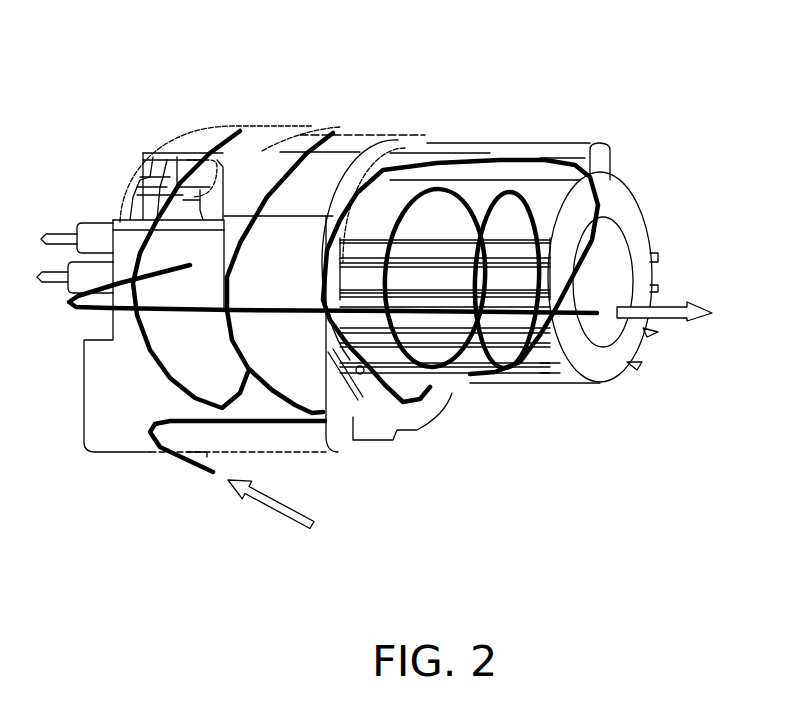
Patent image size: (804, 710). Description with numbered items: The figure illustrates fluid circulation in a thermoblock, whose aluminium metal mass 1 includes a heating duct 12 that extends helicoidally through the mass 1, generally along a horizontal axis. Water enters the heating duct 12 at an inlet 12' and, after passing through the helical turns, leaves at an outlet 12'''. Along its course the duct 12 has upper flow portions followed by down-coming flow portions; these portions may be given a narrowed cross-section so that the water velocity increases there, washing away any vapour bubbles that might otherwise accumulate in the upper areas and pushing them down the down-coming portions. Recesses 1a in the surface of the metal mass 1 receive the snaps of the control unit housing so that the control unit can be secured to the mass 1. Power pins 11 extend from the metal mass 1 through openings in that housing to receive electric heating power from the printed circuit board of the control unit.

The metal mass 1 is at (422, 93).
The recesses 1a is at (150, 177).
The power pins 11 is at (100, 241).
The heating duct 12 is at (333, 243).
The inlet 12' is at (313, 506).
The outlet 12''' is at (685, 337).